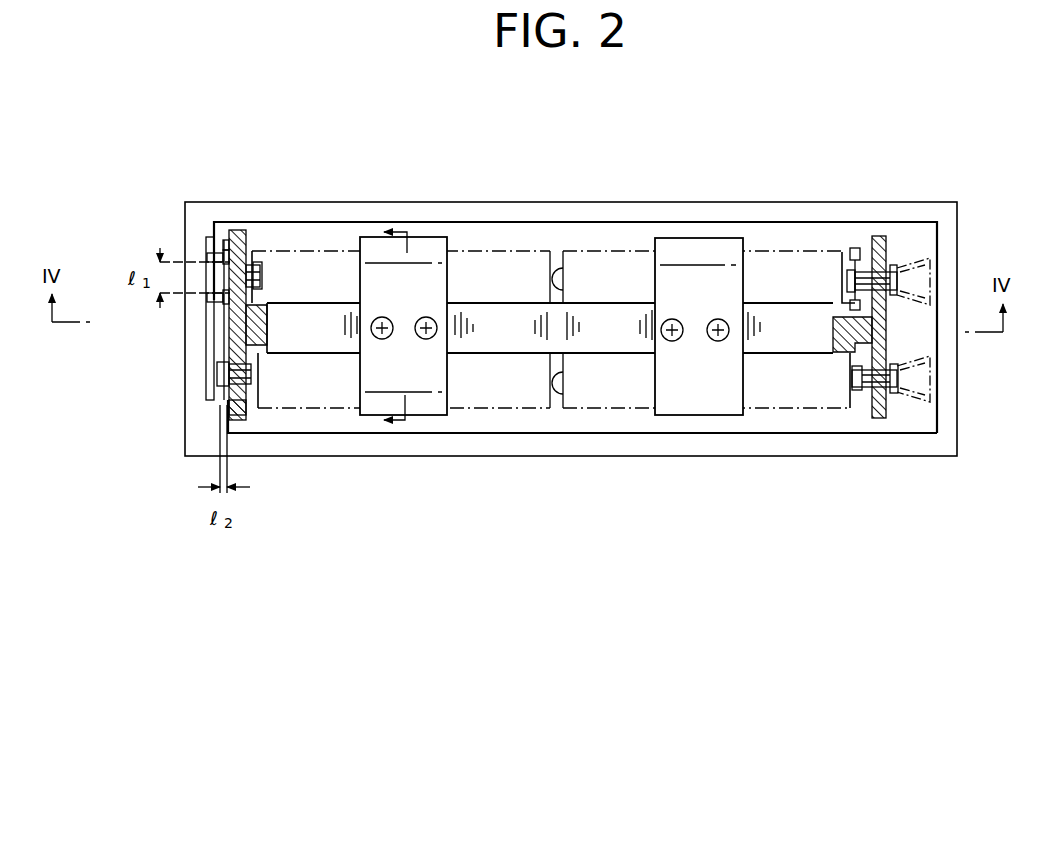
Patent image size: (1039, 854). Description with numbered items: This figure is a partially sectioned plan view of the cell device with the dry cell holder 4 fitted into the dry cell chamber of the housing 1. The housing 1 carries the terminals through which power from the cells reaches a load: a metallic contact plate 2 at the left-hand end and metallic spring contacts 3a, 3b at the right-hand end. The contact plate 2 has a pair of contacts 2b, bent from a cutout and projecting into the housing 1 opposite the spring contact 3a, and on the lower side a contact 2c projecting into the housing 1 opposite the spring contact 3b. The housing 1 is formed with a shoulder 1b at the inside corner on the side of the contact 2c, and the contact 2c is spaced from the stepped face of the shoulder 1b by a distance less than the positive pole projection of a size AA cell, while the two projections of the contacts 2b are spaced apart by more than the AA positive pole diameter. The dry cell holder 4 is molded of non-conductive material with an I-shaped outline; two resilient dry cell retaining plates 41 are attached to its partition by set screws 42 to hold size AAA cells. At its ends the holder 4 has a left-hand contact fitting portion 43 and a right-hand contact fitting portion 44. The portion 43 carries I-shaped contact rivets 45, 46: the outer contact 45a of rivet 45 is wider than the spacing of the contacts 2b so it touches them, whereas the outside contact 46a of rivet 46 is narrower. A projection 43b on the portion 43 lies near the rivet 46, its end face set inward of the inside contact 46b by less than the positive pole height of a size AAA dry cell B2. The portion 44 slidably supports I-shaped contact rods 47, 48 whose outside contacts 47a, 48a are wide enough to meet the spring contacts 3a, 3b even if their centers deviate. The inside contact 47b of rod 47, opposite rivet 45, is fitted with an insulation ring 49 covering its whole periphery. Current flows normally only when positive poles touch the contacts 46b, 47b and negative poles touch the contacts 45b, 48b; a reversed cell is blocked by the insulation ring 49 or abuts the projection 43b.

The housing 1 is at (252, 205).
The shoulder 1b is at (211, 414).
The contact plate 2 is at (204, 319).
The contacts 2b is at (206, 297).
The contact 2c is at (215, 350).
The spring contact 3a is at (930, 258).
The spring contact 3b is at (937, 388).
The dry cell holder 4 is at (344, 354).
The dry cell retaining plates 41 is at (428, 245).
The set screws 42 is at (415, 338).
The contact fitting portion 43 is at (240, 230).
The projection 43b is at (246, 420).
The contact fitting portion 44 is at (879, 237).
The contact rivet 45 is at (251, 277).
The outer contact 45a is at (226, 240).
The contact 45b is at (256, 267).
The contact rivet 46 is at (263, 335).
The outside contact 46a is at (225, 373).
The inside contact 46b is at (250, 373).
The contact rod 47 is at (865, 275).
The outside contact 47a is at (897, 277).
The inside contact 47b is at (850, 288).
The contact rod 48 is at (860, 397).
The outside contact 48a is at (890, 395).
The contact 48b is at (851, 379).
The insulation ring 49 is at (853, 250).
The size AAA dry cell B2 is at (778, 250).